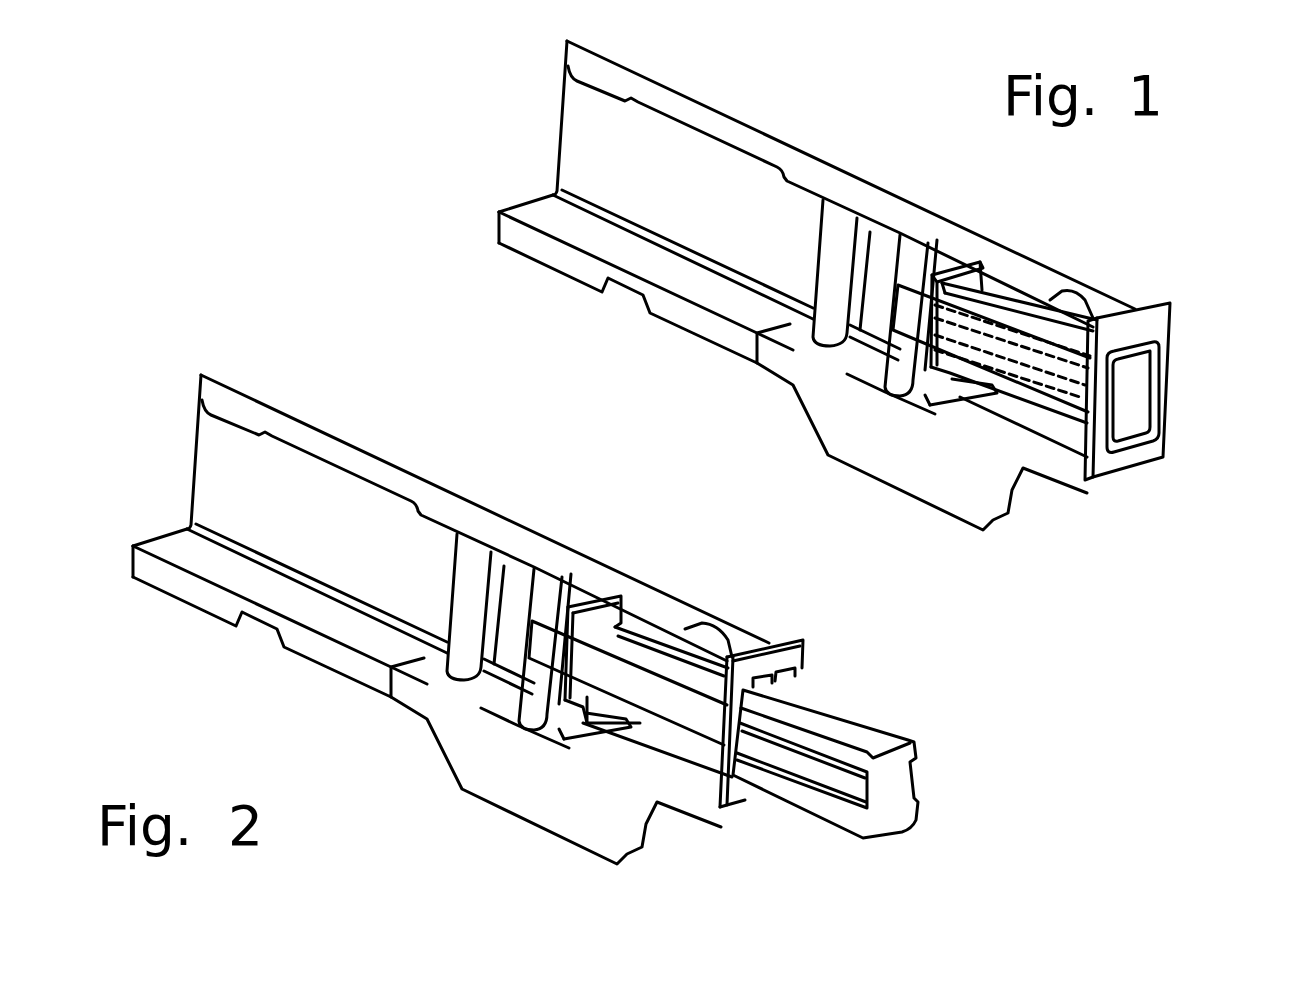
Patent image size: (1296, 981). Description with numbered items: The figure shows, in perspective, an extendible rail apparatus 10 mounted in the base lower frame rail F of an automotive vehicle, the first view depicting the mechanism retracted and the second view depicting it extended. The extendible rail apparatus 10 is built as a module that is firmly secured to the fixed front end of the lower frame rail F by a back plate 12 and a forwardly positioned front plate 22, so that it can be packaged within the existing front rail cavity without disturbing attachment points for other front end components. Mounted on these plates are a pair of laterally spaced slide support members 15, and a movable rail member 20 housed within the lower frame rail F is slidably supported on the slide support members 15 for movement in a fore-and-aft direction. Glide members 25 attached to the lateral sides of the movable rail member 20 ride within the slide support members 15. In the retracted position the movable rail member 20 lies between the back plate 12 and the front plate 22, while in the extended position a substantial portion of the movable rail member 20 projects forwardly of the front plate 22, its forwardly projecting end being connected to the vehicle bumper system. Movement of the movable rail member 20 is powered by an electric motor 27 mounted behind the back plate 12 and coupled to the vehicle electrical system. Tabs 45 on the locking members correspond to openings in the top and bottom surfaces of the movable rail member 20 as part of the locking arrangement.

In FIG. 1, the lower frame rail F is at (713, 140).
In FIG. 2, the lower frame rail F is at (451, 619).
In FIG. 1, the extendible rail apparatus 10 is at (1100, 406).
In FIG. 2, the extendible rail apparatus 10 is at (924, 728).
In FIG. 1, the back plate 12 is at (947, 267).
In FIG. 2, the back plate 12 is at (597, 613).
In FIG. 1, the slide support members 15 is at (853, 343).
In FIG. 2, the slide support members 15 is at (540, 643).
In FIG. 1, the movable rail member 20 is at (1143, 397).
In FIG. 2, the movable rail member 20 is at (866, 766).
In FIG. 1, the front plate 22 is at (1167, 318).
In FIG. 2, the front plate 22 is at (803, 640).
In FIG. 2, the glide members 25 is at (822, 773).
In FIG. 1, the electric motor 27 is at (925, 383).
In FIG. 2, the electric motor 27 is at (543, 720).
In FIG. 2, the tabs 45 is at (797, 680).